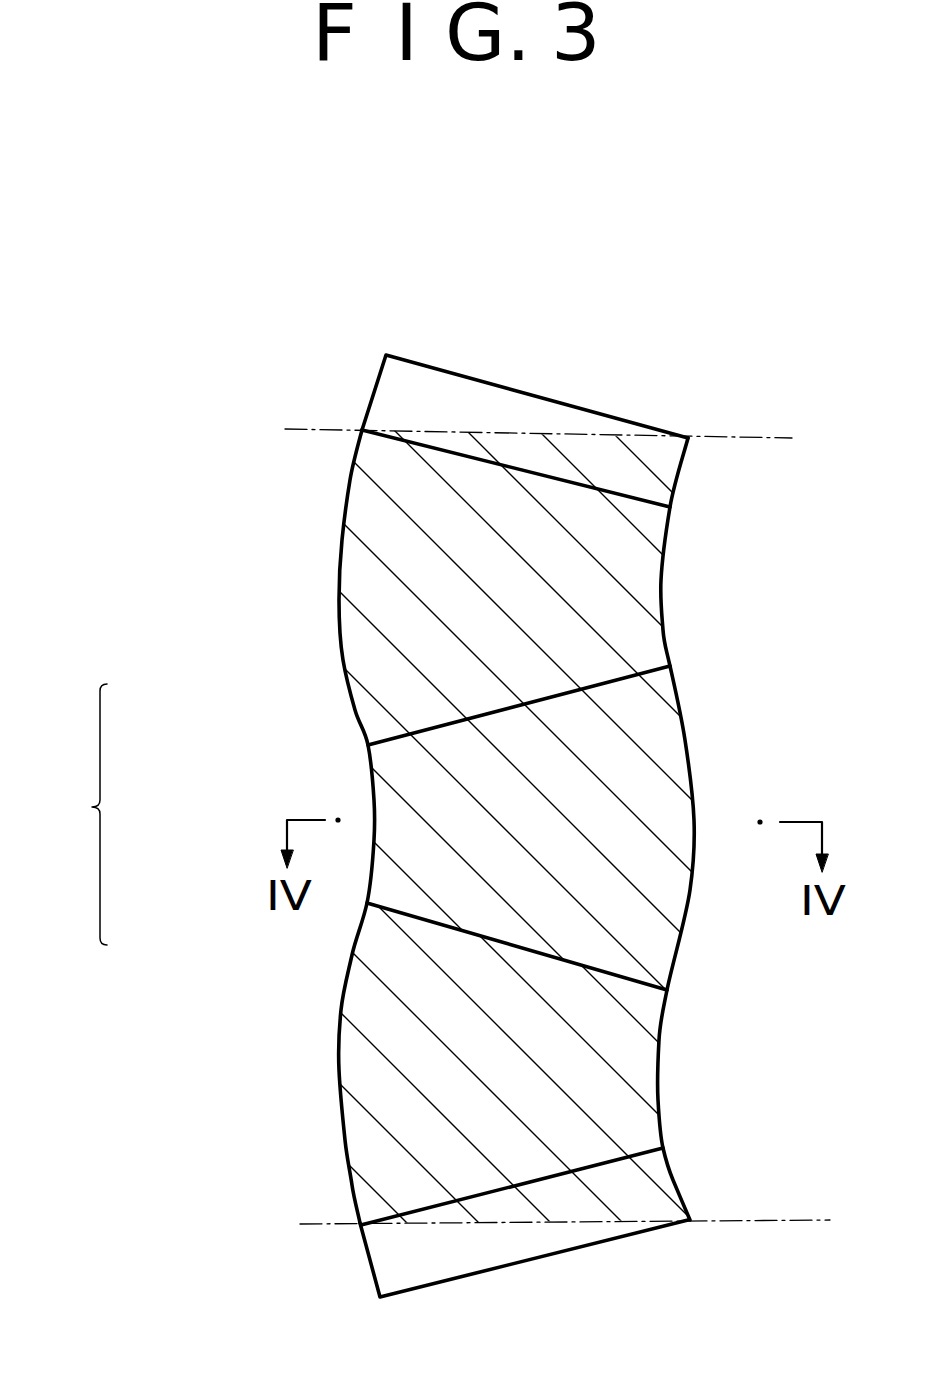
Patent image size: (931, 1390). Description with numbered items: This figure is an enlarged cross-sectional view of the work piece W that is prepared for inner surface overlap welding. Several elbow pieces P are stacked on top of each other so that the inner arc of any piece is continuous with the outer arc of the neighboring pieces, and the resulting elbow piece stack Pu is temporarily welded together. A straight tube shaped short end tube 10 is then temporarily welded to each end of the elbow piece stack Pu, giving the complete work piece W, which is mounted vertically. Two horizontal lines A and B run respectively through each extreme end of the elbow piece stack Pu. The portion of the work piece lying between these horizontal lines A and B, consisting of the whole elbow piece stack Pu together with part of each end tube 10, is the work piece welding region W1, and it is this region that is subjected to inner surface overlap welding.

The end tube 10 is at (483, 397).
The work piece W is at (600, 403).
The work piece welding region W1 is at (578, 870).
The elbow piece P is at (340, 636).
The elbow piece stack Pu is at (71, 814).
The horizontal line A is at (728, 1222).
The horizontal line B is at (762, 440).